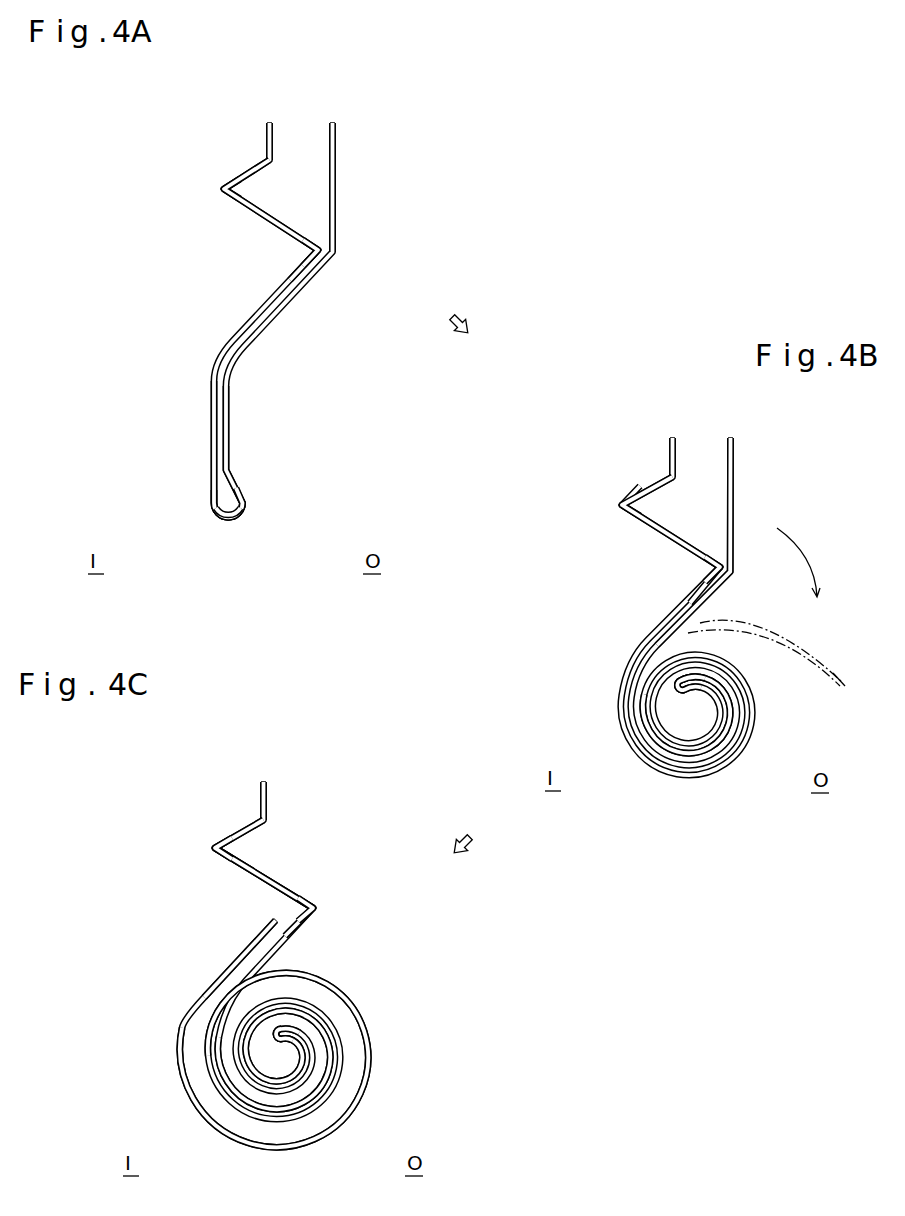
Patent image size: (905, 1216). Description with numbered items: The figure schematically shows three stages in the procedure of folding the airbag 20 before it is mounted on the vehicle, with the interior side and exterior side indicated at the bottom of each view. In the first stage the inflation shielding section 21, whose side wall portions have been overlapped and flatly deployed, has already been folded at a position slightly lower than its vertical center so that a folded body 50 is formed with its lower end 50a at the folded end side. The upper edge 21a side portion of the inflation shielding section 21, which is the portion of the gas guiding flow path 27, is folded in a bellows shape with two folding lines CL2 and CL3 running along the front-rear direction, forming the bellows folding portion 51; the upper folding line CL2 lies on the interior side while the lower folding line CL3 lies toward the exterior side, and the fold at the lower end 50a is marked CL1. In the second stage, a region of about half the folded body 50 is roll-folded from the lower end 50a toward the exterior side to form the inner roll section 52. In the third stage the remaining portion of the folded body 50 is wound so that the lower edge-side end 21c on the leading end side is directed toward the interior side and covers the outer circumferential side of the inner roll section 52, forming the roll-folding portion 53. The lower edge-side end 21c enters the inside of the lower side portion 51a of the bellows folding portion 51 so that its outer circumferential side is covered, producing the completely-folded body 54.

In FIG. 4A, the airbag 20 is at (420, 168).
In FIG. 4A, the inflation shielding section 21 is at (387, 320).
In FIG. 4B, the inflation shielding section 21 is at (686, 606).
In FIG. 4A, the upper edge 21a is at (267, 123).
In FIG. 4B, the upper edge 21a is at (668, 438).
In FIG. 4A, the lower edge-side end 21c is at (335, 123).
In FIG. 4B, the lower edge-side end 21c is at (733, 438).
In FIG. 4C, the lower edge-side end 21c is at (279, 922).
In FIG. 4A, the gas guiding flow path 27 is at (218, 221).
In FIG. 4B, the gas guiding flow path 27 is at (627, 534).
In FIG. 4A, the folded body 50 is at (153, 426).
In FIG. 4A, the lower end 50a is at (245, 503).
In FIG. 4B, the lower end 50a is at (652, 747).
In FIG. 4C, the lower end 50a is at (254, 1114).
In FIG. 4A, the bellows folding portion 51 is at (198, 220).
In FIG. 4B, the bellows folding portion 51 is at (607, 540).
In FIG. 4C, the bellows folding portion 51 is at (201, 820).
In FIG. 4C, the lower side portion 51a is at (245, 893).
In FIG. 4B, the inner roll section 52 is at (710, 790).
In FIG. 4C, the inner roll section 52 is at (349, 1024).
In FIG. 4C, the roll-folding portion 53 is at (358, 1120).
In FIG. 4C, the completely-folded body 54 is at (347, 818).
In FIG. 4A, the first bending line CL1 is at (226, 518).
In FIG. 4B, the first bending line CL1 is at (686, 692).
In FIG. 4C, the first bending line CL1 is at (283, 1040).
In FIG. 4A, the upper folding line CL2 is at (222, 190).
In FIG. 4B, the upper folding line CL2 is at (622, 505).
In FIG. 4C, the upper folding line CL2 is at (214, 848).
In FIG. 4A, the lower folding line CL3 is at (316, 250).
In FIG. 4B, the lower folding line CL3 is at (718, 568).
In FIG. 4C, the lower folding line CL3 is at (317, 908).